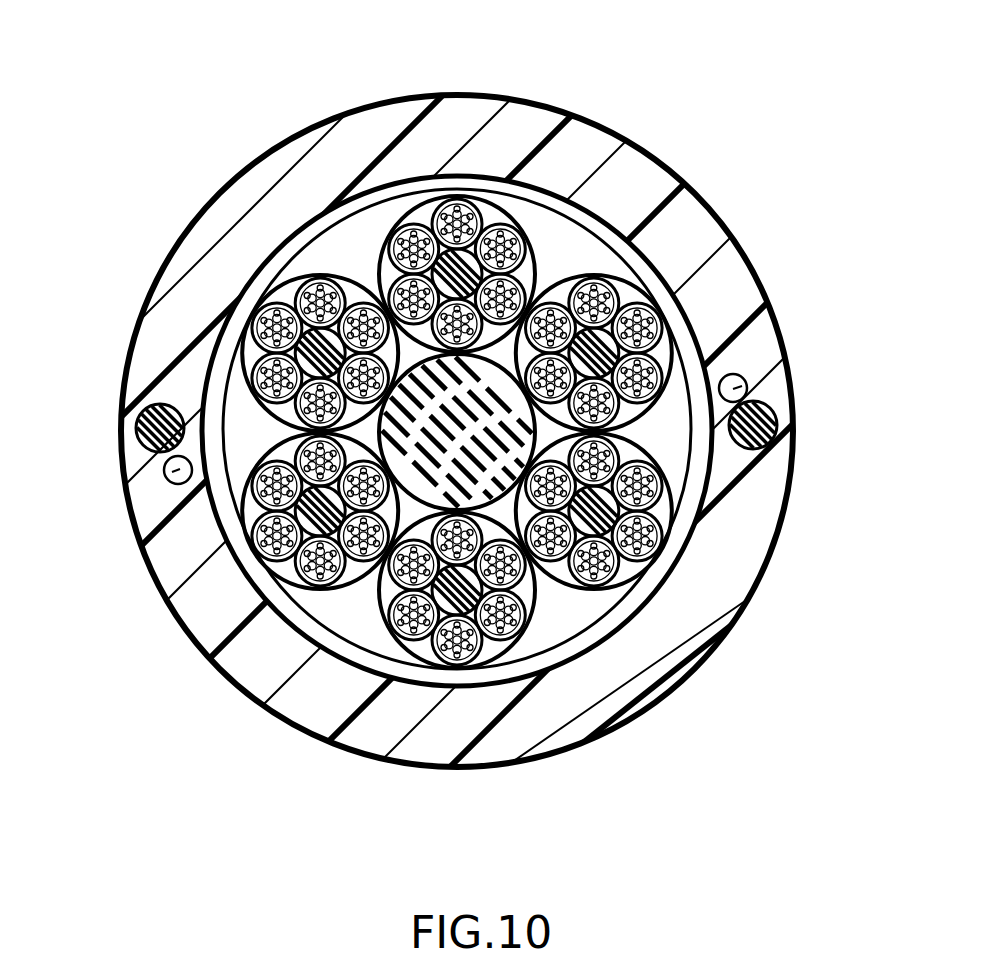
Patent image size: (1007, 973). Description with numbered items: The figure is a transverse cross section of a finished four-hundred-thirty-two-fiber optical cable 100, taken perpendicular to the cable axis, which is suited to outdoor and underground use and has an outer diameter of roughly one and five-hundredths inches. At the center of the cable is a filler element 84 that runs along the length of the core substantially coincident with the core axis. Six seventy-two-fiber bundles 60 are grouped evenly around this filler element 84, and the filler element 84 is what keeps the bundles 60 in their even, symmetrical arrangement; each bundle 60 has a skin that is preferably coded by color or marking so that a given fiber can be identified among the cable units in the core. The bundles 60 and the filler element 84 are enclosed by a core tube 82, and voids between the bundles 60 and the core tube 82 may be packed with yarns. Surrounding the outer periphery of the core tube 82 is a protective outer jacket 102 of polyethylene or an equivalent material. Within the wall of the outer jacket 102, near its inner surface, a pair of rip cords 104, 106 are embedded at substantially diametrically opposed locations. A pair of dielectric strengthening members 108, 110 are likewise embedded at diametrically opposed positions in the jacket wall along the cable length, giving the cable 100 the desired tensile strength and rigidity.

The cable 100 is at (578, 82).
The outer jacket 102 is at (612, 134).
The core tube 82 is at (647, 200).
The filler element 84 is at (474, 452).
The fiber bundles 60 is at (556, 614).
The rip cord 104 is at (170, 474).
The rip cord 106 is at (742, 386).
The dielectric strengthening member 108 is at (136, 434).
The dielectric strengthening member 110 is at (775, 422).